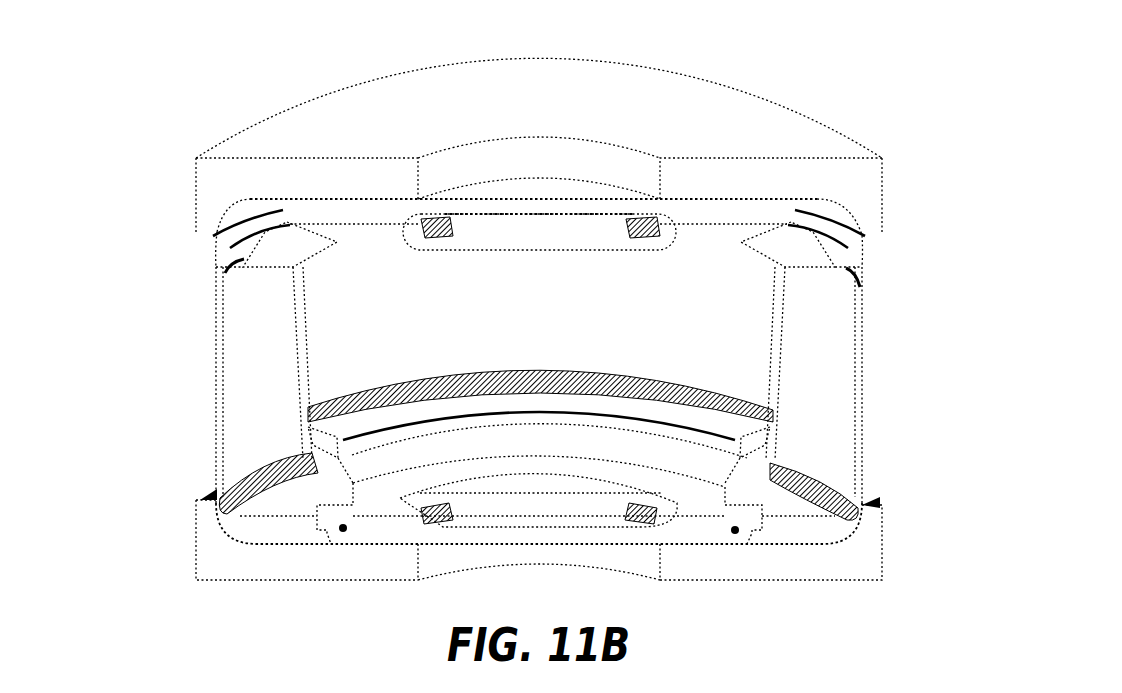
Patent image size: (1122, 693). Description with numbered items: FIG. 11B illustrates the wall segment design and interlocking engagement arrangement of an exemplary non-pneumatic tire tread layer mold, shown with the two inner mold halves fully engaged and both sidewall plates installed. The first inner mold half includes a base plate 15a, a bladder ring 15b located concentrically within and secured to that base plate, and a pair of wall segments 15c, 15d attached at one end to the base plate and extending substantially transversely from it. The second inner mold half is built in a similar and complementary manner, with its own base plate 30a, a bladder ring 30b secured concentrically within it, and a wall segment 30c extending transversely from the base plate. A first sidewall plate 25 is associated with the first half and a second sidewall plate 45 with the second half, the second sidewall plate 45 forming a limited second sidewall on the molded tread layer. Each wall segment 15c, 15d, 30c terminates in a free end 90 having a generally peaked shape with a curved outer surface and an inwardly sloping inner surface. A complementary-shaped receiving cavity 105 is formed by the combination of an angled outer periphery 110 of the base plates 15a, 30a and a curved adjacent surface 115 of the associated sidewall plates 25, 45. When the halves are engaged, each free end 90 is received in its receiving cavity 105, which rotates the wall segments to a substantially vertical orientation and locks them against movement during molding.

The base plate 15a is at (461, 195).
The bladder ring 15b is at (610, 223).
The wall segment 15c is at (220, 403).
The wall segment 15d is at (860, 403).
The first sidewall plate 25 is at (218, 567).
The base plate 30a is at (397, 530).
The bladder ring 30b is at (612, 518).
The wall segment 30c is at (563, 322).
The second sidewall plate 45 is at (297, 102).
The free end 90 is at (260, 252).
The receiving cavity 105 is at (292, 186).
The angled outer periphery 110 is at (218, 231).
The curved adjacent surface 115 is at (233, 198).